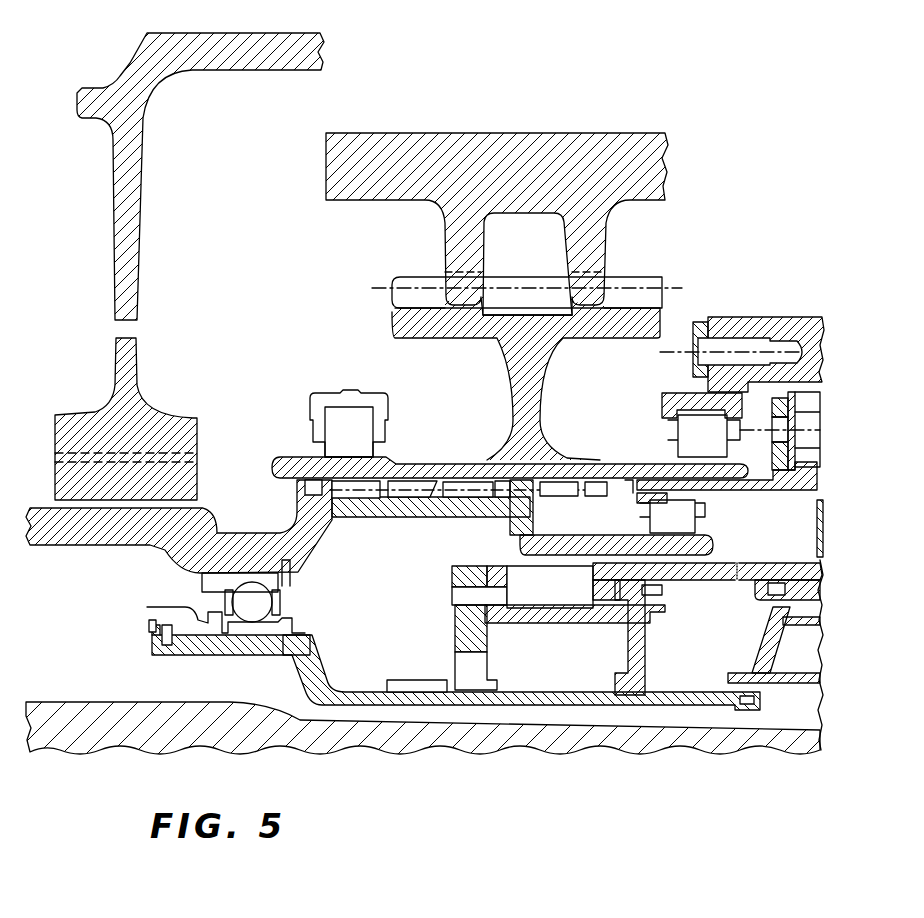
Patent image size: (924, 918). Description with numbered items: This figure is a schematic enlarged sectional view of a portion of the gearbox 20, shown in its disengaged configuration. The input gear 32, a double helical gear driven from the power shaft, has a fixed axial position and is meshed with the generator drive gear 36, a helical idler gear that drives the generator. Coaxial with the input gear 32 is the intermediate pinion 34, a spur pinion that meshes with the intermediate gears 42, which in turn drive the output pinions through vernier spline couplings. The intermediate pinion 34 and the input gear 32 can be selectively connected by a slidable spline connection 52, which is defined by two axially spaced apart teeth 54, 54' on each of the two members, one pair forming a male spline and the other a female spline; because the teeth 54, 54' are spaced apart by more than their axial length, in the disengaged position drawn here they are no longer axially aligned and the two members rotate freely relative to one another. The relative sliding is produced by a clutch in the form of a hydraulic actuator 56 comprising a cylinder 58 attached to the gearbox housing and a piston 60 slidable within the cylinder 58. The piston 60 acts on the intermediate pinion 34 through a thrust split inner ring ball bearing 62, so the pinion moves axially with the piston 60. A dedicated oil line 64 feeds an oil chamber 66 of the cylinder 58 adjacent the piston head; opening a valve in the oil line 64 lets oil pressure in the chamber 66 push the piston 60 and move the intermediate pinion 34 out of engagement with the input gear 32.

The gearbox 20 is at (786, 160).
The input gear 32 is at (628, 473).
The intermediate pinion 34 is at (107, 527).
The generator drive gear 36 is at (603, 229).
The intermediate gear 42 is at (137, 405).
The spline connection 52 is at (542, 468).
The tooth 54 is at (468, 511).
The tooth 54' is at (401, 442).
The hydraulic actuator 56 is at (634, 712).
The cylinder 58 is at (773, 567).
The piston 60 is at (643, 657).
The thrust split inner ring ball bearing 62 is at (247, 610).
The oil line 64 is at (800, 609).
The oil chamber 66 is at (723, 645).